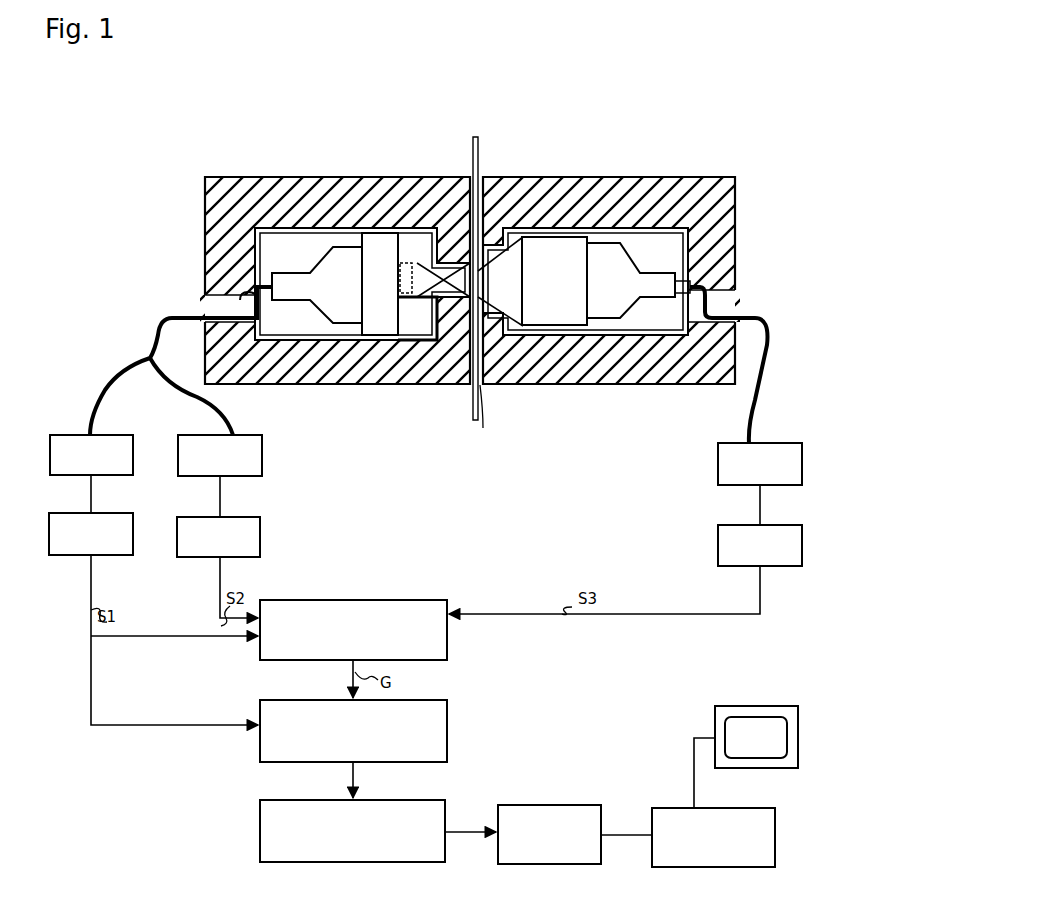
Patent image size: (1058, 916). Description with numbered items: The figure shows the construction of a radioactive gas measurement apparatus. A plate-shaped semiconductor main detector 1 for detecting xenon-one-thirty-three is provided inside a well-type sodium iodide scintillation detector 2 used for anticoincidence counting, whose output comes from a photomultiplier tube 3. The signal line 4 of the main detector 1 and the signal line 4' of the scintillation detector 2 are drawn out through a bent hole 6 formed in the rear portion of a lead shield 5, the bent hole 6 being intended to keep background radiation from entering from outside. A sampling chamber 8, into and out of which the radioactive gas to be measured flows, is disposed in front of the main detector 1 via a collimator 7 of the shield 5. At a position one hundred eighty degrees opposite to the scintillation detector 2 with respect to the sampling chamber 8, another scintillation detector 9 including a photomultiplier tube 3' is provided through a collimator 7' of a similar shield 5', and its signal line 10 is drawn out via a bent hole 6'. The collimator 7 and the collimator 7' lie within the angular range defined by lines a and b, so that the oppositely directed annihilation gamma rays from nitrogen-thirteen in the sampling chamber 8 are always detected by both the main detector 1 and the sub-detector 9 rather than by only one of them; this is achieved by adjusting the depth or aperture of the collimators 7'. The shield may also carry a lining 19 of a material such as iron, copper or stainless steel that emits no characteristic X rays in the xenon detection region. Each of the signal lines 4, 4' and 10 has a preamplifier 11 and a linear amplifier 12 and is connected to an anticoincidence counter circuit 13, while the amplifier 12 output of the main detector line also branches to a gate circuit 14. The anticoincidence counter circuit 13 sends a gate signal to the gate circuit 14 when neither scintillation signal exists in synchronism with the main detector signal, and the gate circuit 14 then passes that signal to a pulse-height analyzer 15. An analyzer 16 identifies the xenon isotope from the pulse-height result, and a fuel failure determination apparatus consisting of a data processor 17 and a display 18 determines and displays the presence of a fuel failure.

The main detector 1 is at (427, 215).
The scintillation detector 2 is at (400, 330).
The photomultiplier tube 3 is at (301, 228).
The photomultiplier tube 3' is at (606, 343).
The signal line 4 is at (169, 376).
The signal line 4' is at (191, 396).
The lead shield 5 is at (324, 252).
The shield 5' is at (621, 254).
The bent hole 6 is at (195, 262).
The bent hole 6' is at (744, 254).
The collimator 7 is at (451, 299).
The collimator 7' is at (499, 423).
The sampling chamber 8 is at (490, 232).
The scintillation detector 9 is at (570, 248).
The signal line 10 is at (773, 363).
The preamplifier 11 is at (133, 459).
The linear amplifier 12 is at (125, 513).
The anticoincidence counter circuit 13 is at (447, 602).
The gate circuit 14 is at (447, 722).
The pulse-height analyzer 15 is at (260, 836).
The analyzer 16 is at (558, 806).
The data processor 17 is at (677, 808).
The display 18 is at (734, 706).
The lining 19 is at (658, 190).
The line a is at (565, 342).
The line b is at (557, 222).